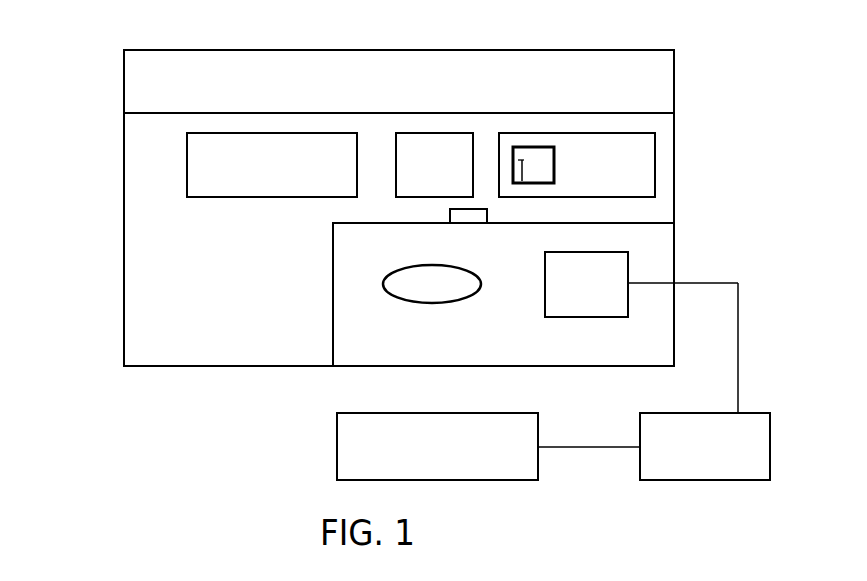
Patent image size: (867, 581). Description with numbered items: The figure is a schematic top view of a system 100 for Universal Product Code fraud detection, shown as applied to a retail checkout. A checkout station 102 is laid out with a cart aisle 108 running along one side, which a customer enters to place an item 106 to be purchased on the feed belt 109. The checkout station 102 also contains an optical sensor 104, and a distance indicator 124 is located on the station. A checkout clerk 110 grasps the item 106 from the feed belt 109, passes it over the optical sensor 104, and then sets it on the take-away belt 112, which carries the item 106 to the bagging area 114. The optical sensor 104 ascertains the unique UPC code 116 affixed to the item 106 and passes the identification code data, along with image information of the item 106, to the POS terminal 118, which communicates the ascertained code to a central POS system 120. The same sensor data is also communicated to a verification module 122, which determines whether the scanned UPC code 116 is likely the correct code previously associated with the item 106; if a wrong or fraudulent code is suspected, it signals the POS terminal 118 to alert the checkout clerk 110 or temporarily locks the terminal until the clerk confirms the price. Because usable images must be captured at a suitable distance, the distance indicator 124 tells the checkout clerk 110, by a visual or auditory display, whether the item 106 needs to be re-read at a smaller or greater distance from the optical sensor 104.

The system 100 is at (100, 84).
The checkout station 102 is at (124, 272).
The optical sensor 104 is at (450, 172).
The item 106 is at (543, 150).
The cart aisle 108 is at (370, 92).
The feed belt 109 is at (624, 172).
The checkout clerk 110 is at (428, 304).
The take-away belt 112 is at (280, 172).
The bagging area 114 is at (230, 308).
The UPC code 116 is at (518, 152).
The POS terminal 118 is at (545, 268).
The POS system 120 is at (695, 413).
The verification module 122 is at (440, 413).
The distance indicator 124 is at (463, 222).